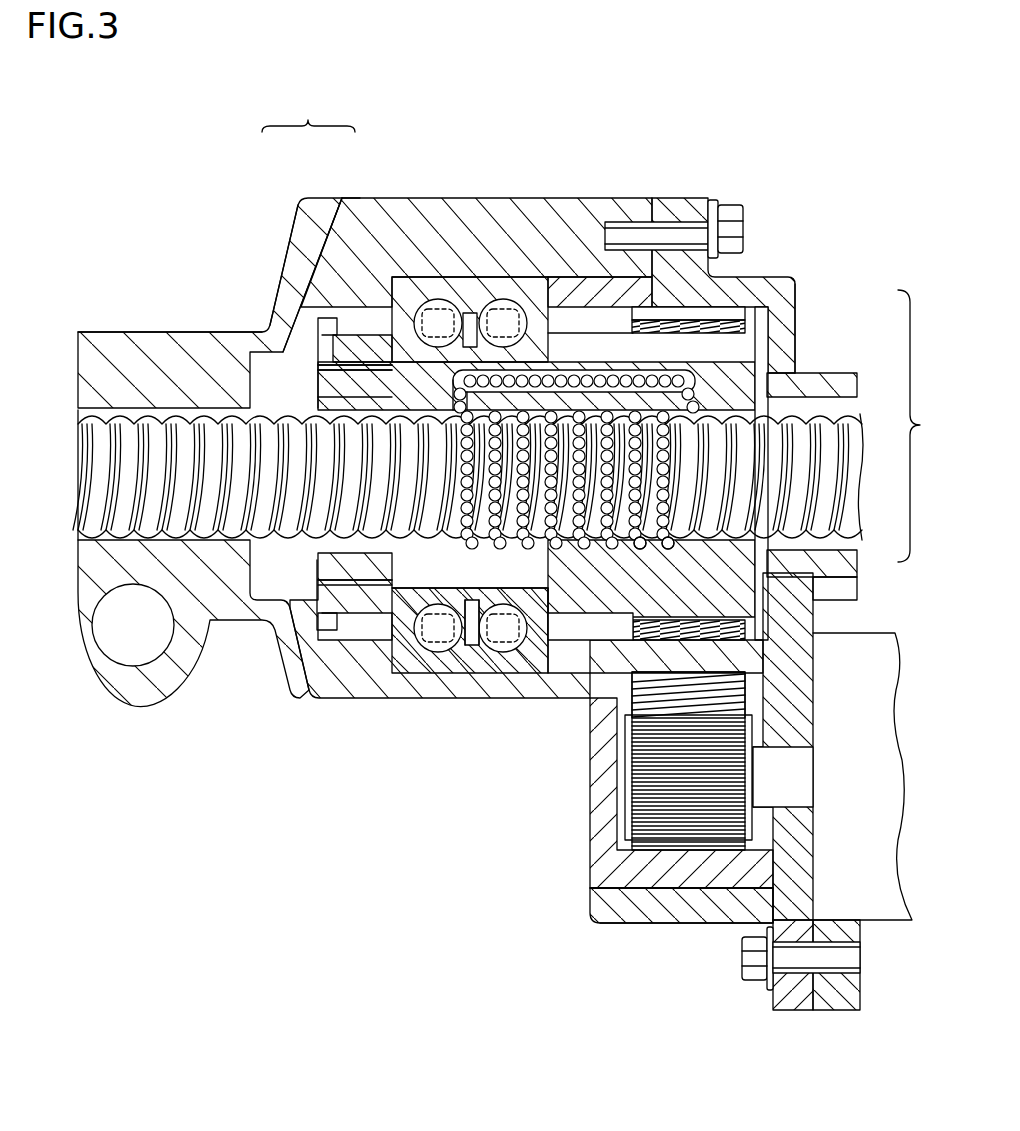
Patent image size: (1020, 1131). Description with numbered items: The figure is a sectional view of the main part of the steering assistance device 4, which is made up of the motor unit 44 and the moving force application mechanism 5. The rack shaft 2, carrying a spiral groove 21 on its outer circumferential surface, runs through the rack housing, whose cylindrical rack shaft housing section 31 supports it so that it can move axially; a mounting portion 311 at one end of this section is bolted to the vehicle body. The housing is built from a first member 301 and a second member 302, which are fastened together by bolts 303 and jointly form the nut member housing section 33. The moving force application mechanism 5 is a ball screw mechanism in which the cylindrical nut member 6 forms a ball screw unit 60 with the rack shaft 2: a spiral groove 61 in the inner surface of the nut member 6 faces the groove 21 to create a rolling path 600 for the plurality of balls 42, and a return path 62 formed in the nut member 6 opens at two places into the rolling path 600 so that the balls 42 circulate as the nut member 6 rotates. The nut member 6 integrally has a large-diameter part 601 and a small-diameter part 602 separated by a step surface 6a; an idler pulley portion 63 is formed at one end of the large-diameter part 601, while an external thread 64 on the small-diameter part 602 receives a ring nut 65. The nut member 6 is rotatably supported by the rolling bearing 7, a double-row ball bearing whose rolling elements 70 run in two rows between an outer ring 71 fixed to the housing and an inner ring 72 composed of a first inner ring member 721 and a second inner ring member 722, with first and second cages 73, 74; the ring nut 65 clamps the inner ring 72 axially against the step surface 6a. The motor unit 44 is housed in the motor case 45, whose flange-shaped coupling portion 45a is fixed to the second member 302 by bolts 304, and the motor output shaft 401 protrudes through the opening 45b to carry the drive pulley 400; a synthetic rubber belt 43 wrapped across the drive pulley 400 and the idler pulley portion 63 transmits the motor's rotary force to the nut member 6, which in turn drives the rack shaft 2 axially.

The rack shaft 2 is at (462, 409).
The spiral groove 21 is at (277, 413).
The rack shaft housing section 31 is at (145, 345).
The first member 301 is at (210, 333).
The second member 302 is at (793, 277).
The bolt 303 is at (730, 210).
The bolt 304 is at (742, 975).
The mounting portion 311 is at (138, 703).
The nut member housing section 33 is at (425, 197).
The steering assistance device 4 is at (918, 426).
The drive pulley 400 is at (630, 807).
The shaft 401 is at (800, 765).
The balls 42 is at (670, 485).
The belt 43 is at (748, 687).
The motor unit 44 is at (862, 633).
The motor case 45 is at (878, 818).
The coupling portion 45a is at (850, 990).
The opening 45b is at (810, 782).
The moving force application mechanism 5 is at (777, 327).
The nut member 6 is at (757, 340).
The step surface 6a is at (548, 345).
The ball screw unit 60 is at (727, 407).
The rolling path 600 is at (647, 551).
The large-diameter part 601 is at (607, 350).
The small-diameter part 602 is at (300, 310).
The spiral groove 61 is at (675, 550).
The return path 62 is at (625, 380).
The idler pulley portion 63 is at (720, 332).
The external thread 64 is at (317, 590).
The ring nut 65 is at (320, 603).
The rolling bearing 7 is at (380, 653).
The rolling elements 70 is at (414, 630).
The outer ring 71 is at (473, 645).
The inner ring 72 is at (308, 116).
The first inner ring member 721 is at (333, 213).
The second inner ring member 722 is at (362, 305).
The first cage 73 is at (470, 603).
The second cage 74 is at (482, 600).